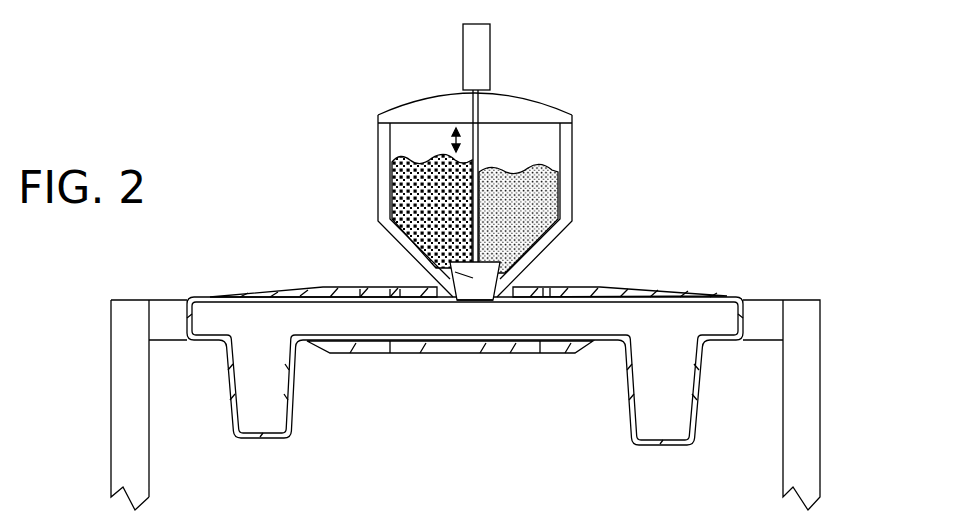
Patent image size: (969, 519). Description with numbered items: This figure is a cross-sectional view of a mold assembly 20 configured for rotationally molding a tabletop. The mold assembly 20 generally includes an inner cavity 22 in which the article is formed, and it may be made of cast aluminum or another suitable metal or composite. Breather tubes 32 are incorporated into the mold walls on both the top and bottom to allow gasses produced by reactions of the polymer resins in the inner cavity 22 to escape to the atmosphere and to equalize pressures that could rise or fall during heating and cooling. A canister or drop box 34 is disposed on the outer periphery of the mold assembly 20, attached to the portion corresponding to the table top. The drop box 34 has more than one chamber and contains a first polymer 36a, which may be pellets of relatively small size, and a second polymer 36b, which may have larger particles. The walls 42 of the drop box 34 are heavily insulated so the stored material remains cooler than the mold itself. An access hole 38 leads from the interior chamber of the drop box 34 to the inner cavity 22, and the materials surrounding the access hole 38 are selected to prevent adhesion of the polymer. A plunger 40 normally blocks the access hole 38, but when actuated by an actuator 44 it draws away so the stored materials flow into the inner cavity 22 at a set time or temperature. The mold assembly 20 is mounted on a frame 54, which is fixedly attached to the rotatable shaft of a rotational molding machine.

The mold assembly 20 is at (337, 238).
The inner cavity 22 is at (262, 398).
The breather tubes 32 is at (298, 290).
The drop box 34 is at (657, 102).
The first polymer 36a is at (535, 225).
The second polymer 36b is at (405, 180).
The access hole 38 is at (500, 296).
The plunger 40 is at (447, 263).
The walls 42 is at (567, 177).
The actuator 44 is at (478, 57).
The frame 54 is at (808, 363).